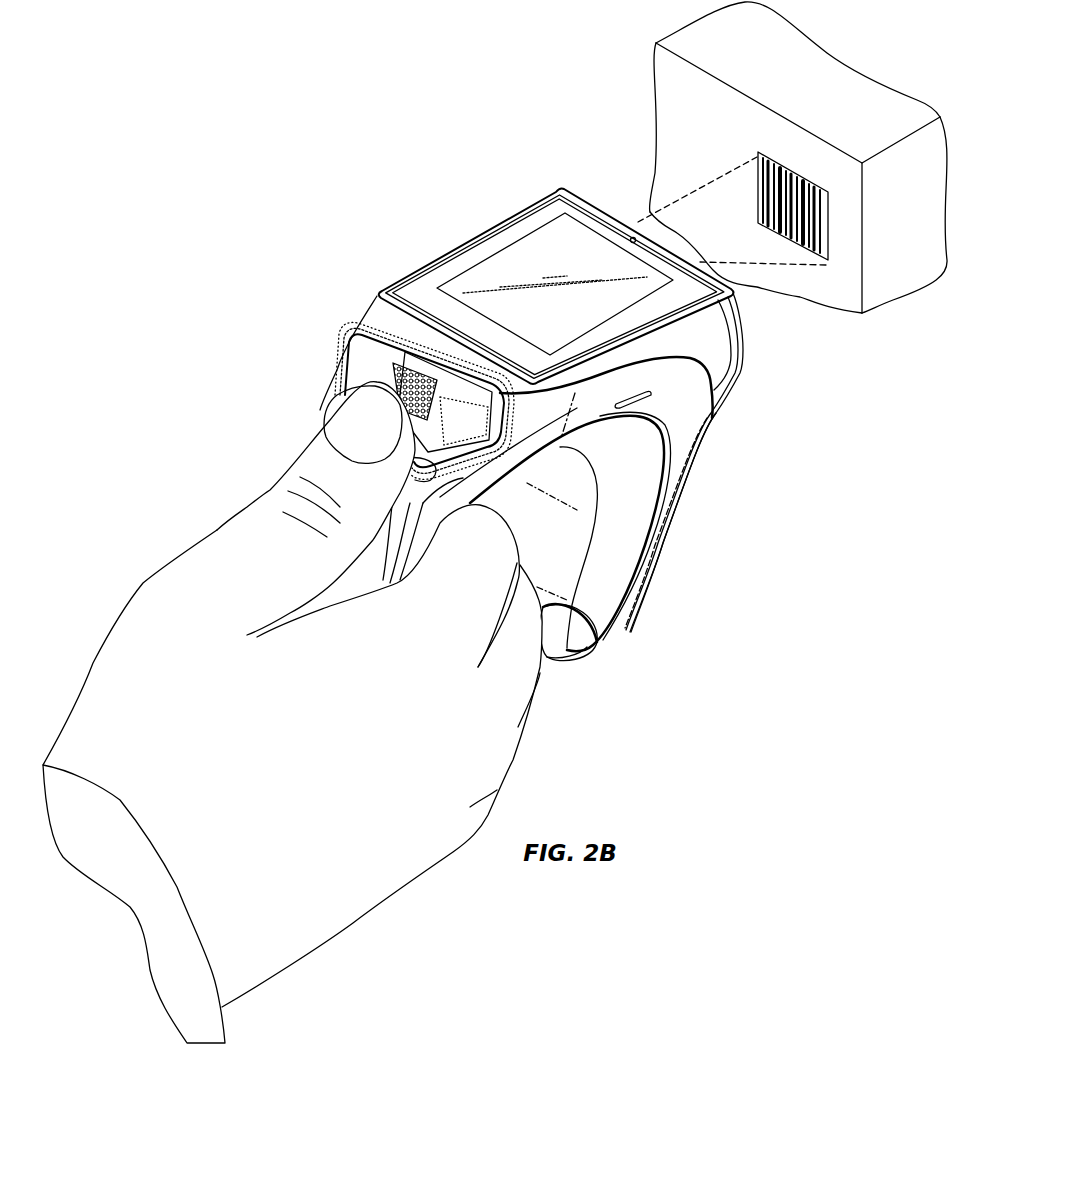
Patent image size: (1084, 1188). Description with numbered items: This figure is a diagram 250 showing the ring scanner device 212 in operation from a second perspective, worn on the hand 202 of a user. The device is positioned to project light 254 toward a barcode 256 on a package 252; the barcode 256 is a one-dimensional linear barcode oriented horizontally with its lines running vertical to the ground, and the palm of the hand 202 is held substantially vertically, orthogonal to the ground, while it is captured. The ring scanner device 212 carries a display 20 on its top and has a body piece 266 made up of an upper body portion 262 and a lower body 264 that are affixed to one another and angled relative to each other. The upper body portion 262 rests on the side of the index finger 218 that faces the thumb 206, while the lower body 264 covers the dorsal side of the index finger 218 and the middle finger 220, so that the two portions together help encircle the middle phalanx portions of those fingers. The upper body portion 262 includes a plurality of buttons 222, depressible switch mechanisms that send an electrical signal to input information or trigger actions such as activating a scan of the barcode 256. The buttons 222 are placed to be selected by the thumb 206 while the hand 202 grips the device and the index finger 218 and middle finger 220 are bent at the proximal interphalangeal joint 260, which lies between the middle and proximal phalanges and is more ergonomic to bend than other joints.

The display screen 20 is at (515, 258).
The hand 202 is at (351, 908).
The thumb 206 is at (317, 460).
The ring scanner device 212 is at (410, 271).
The index finger 218 is at (522, 539).
The middle finger 220 is at (555, 669).
The plurality of buttons 222 is at (330, 355).
The diagram 250 is at (528, 103).
The package 252 is at (933, 277).
The light 254 is at (697, 187).
The barcode 256 is at (830, 218).
The proximal interphalangeal joint 260 is at (597, 642).
The upper body portion 262 is at (760, 280).
The lower body 264 is at (760, 386).
The body piece 266 is at (657, 611).